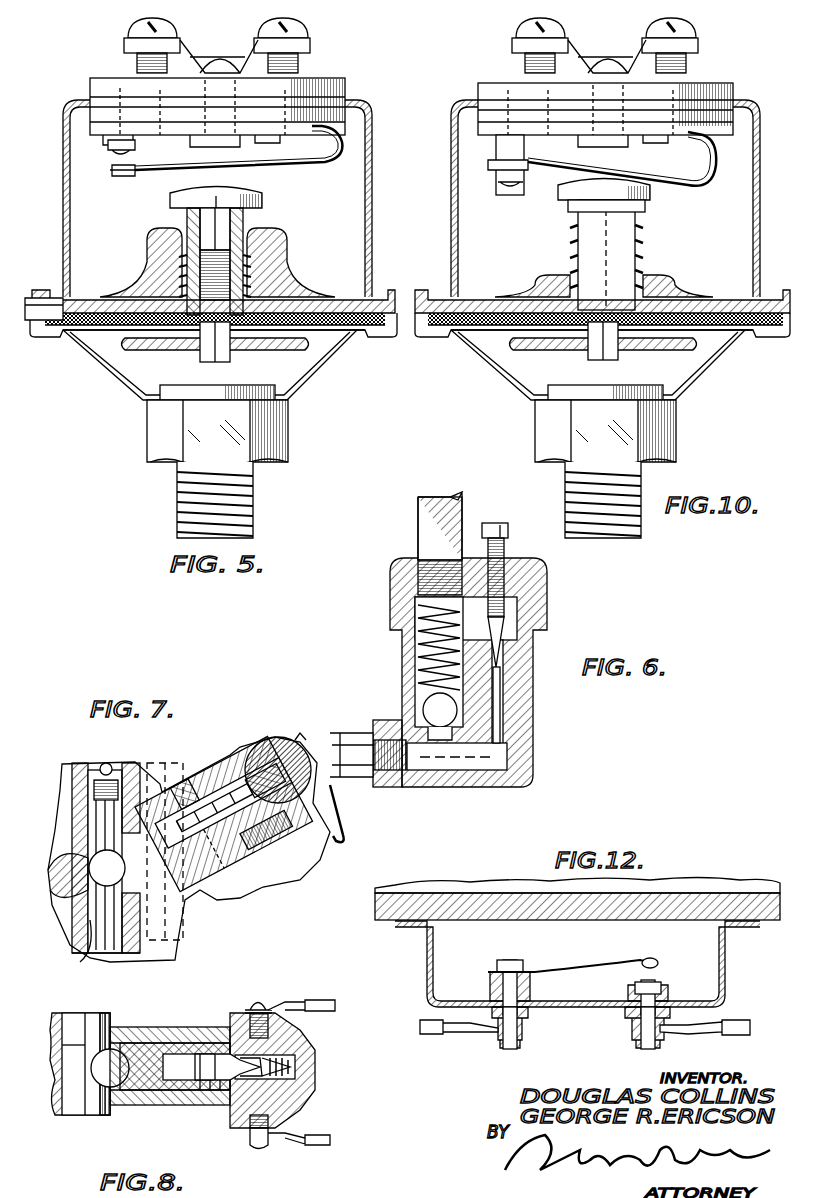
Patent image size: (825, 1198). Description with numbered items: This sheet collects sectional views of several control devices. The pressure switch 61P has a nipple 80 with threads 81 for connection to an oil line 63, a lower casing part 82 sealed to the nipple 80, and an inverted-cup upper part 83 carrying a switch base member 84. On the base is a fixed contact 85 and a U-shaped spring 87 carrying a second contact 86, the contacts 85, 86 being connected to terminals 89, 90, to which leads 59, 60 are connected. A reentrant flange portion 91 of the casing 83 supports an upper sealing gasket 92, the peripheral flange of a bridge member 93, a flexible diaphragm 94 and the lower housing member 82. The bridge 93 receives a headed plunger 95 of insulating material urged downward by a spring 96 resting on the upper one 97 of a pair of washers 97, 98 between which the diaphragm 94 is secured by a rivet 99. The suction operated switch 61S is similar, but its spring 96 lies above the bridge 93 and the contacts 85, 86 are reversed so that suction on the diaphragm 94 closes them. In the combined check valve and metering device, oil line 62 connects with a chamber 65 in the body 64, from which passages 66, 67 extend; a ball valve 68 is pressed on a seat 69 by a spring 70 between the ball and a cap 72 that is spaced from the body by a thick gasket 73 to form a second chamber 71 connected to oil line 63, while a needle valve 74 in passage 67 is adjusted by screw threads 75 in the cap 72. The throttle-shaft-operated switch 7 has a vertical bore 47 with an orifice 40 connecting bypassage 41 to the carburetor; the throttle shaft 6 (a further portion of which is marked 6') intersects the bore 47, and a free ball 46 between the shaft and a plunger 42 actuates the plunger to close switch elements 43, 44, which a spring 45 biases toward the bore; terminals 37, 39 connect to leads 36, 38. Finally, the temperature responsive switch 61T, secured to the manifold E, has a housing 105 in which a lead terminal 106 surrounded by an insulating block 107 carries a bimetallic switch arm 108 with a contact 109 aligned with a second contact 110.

In FIG. 5, the upper casing part 83 is at (63, 210).
In FIG. 5, the pressure switch 61P is at (372, 112).
In FIG. 5, the switch base member 84 is at (90, 112).
In FIG. 5, the terminal 89 is at (128, 35).
In FIG. 10, the terminal 89 is at (522, 45).
In FIG. 5, the terminal 90 is at (308, 40).
In FIG. 10, the terminal 90 is at (648, 45).
In FIG. 5, the fixed contact 85 is at (110, 148).
In FIG. 10, the fixed contact 85 is at (495, 165).
In FIG. 5, the second contact 86 is at (112, 170).
In FIG. 10, the second contact 86 is at (492, 192).
In FIG. 5, the U-shaped spring 87 is at (333, 168).
In FIG. 5, the headed plunger 95 is at (263, 203).
In FIG. 5, the spring 96 is at (251, 267).
In FIG. 10, the spring 96 is at (625, 256).
In FIG. 5, the upper washer 97 is at (250, 285).
In FIG. 10, the upper washer 97 is at (673, 277).
In FIG. 5, the bridge member 93 is at (112, 295).
In FIG. 10, the bridge member 93 is at (604, 279).
In FIG. 5, the reentrant flange portion 91 is at (38, 322).
In FIG. 5, the upper sealing gasket 92 is at (45, 297).
In FIG. 5, the lower casing part 82 is at (108, 366).
In FIG. 10, the lower casing part 82 is at (598, 365).
In FIG. 5, the lower washer 98 is at (140, 345).
In FIG. 10, the lower washer 98 is at (603, 352).
In FIG. 5, the rivet 99 is at (226, 355).
In FIG. 10, the rivet 99 is at (608, 344).
In FIG. 5, the flexible diaphragm 94 is at (320, 358).
In FIG. 10, the flexible diaphragm 94 is at (729, 367).
In FIG. 5, the nipple 80 is at (147, 436).
In FIG. 10, the nipple 80 is at (625, 425).
In FIG. 5, the threads 81 is at (177, 503).
In FIG. 10, the suction operated switch 61S is at (609, 173).
In FIG. 6, the body 64 is at (535, 698).
In FIG. 6, the cap 72 is at (547, 575).
In FIG. 6, the oil line 63 is at (418, 535).
In FIG. 6, the thick gasket 73 is at (517, 600).
In FIG. 6, the first passage 66 is at (418, 676).
In FIG. 6, the spring 70 is at (425, 655).
In FIG. 6, the ball valve 68 is at (426, 708).
In FIG. 6, the seat 69 is at (428, 735).
In FIG. 6, the second passage 67 is at (503, 730).
In FIG. 6, the chamber 65 is at (500, 765).
In FIG. 6, the screw threads 75 is at (508, 553).
In FIG. 6, the needle valve 74 is at (500, 636).
In FIG. 6, the second chamber 71 is at (470, 596).
In FIG. 6, the oil line 62 is at (355, 733).
In FIG. 7, the pressure responsive switch 7 is at (215, 768).
In FIG. 8, the pressure responsive switch 7 is at (152, 1105).
In FIG. 7, the switch element 43 is at (232, 768).
In FIG. 8, the switch element 43 is at (225, 1052).
In FIG. 7, the terminal 39 is at (272, 748).
In FIG. 8, the terminal 39 is at (250, 1005).
In FIG. 7, the orifice 40 is at (106, 763).
In FIG. 7, the plunger 42 is at (135, 775).
In FIG. 8, the plunger 42 is at (145, 1045).
In FIG. 7, the bypassage 41 is at (190, 928).
In FIG. 7, the free ball 46 is at (88, 862).
In FIG. 8, the free ball 46 is at (118, 1100).
In FIG. 7, the throttle shaft 6 is at (46, 910).
In FIG. 8, the throttle shaft 6 is at (64, 1064).
In FIG. 7, the cylinder wall 6' is at (57, 937).
In FIG. 8, the cylinder wall 6' is at (48, 1046).
In FIG. 7, the bore 47 is at (108, 953).
In FIG. 8, the spring 45 is at (308, 1040).
In FIG. 8, the switch element 44 is at (218, 1092).
In FIG. 8, the lead 38 is at (310, 1000).
In FIG. 8, the terminal 37 is at (250, 1140).
In FIG. 8, the lead 36 is at (320, 1146).
In FIG. 12, the manifold E is at (655, 875).
In FIG. 12, the temperature responsive switch 61T is at (728, 985).
In FIG. 12, the housing 105 is at (430, 958).
In FIG. 12, the insulating block 107 is at (490, 990).
In FIG. 12, the bimetallic switch arm 108 is at (585, 962).
In FIG. 12, the contact 109 is at (648, 958).
In FIG. 12, the second contact 110 is at (668, 988).
In FIG. 12, the lead terminal 106 is at (522, 1040).
In FIG. 12, the lead 60 is at (428, 1036).
In FIG. 12, the lead 59 is at (745, 1036).